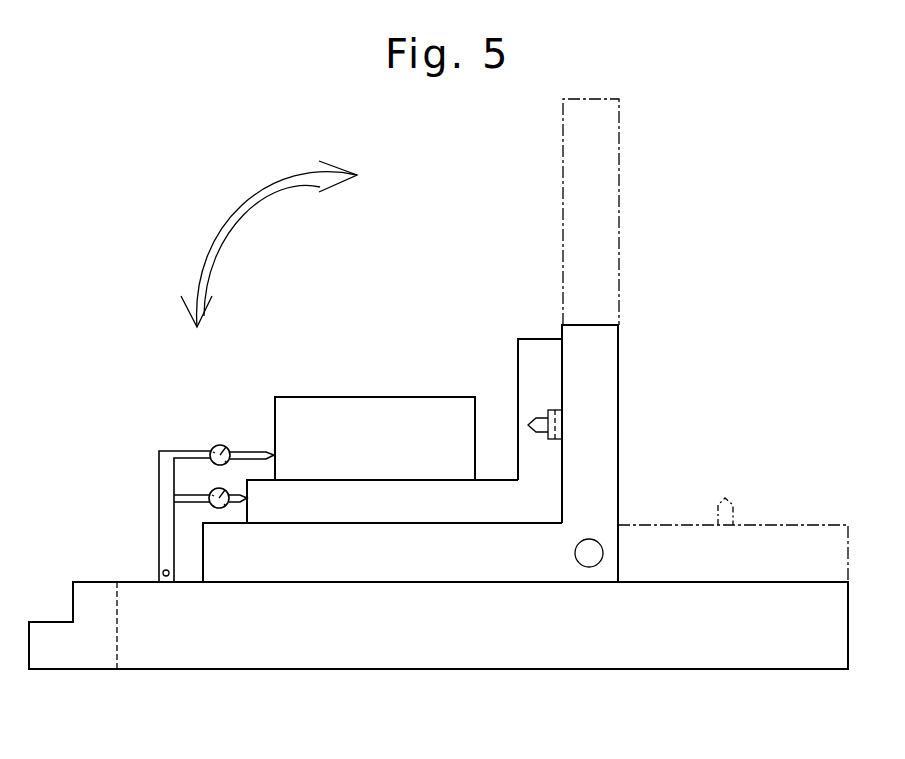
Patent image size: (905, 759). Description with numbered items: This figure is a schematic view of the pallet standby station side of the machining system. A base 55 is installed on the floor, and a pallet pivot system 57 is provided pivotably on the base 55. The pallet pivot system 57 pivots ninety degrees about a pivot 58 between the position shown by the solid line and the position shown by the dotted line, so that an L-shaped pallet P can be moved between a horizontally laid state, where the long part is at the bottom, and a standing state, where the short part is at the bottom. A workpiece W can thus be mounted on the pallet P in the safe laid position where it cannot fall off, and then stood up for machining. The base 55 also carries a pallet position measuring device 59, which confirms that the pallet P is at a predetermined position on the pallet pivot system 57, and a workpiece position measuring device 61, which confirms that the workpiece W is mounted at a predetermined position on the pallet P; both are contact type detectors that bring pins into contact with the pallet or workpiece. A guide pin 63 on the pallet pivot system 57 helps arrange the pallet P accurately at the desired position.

The base 55 is at (829, 638).
The pallet pivot system 57 is at (603, 402).
The pivot 58 is at (587, 584).
The pallet position measuring device 59 is at (224, 488).
The workpiece position measuring device 61 is at (222, 445).
The guide pin 63 is at (538, 415).
The workpiece W is at (358, 410).
The pallet P is at (520, 360).